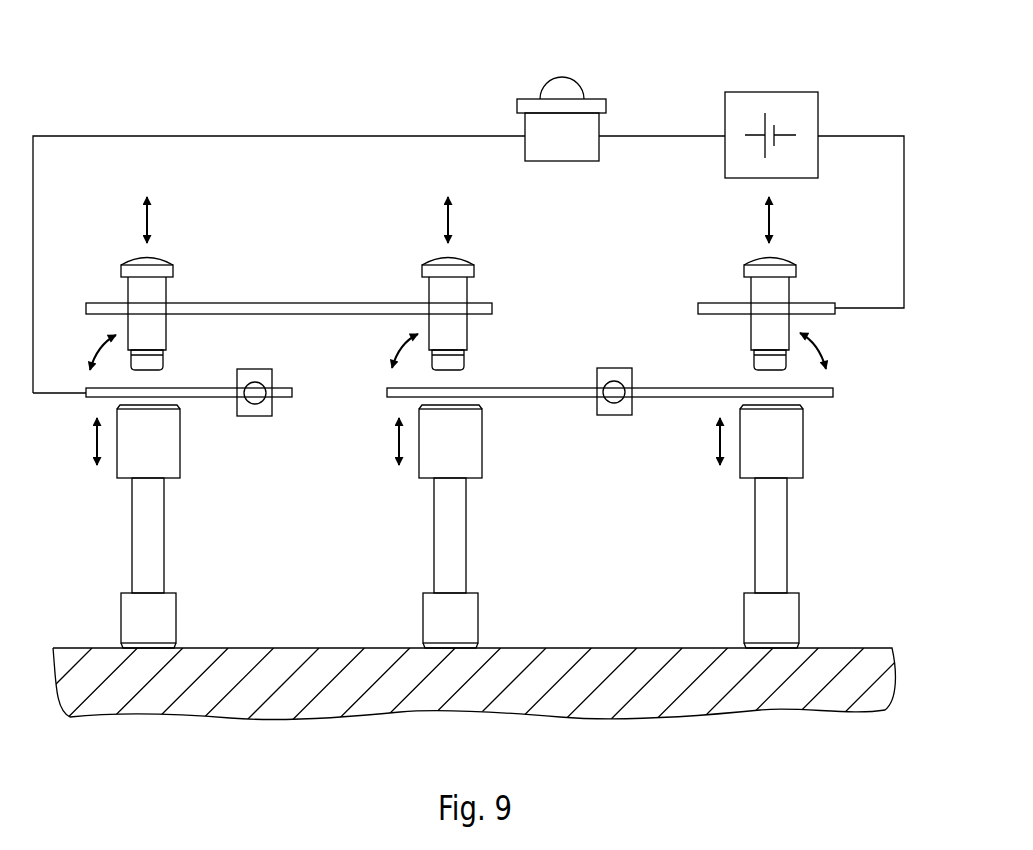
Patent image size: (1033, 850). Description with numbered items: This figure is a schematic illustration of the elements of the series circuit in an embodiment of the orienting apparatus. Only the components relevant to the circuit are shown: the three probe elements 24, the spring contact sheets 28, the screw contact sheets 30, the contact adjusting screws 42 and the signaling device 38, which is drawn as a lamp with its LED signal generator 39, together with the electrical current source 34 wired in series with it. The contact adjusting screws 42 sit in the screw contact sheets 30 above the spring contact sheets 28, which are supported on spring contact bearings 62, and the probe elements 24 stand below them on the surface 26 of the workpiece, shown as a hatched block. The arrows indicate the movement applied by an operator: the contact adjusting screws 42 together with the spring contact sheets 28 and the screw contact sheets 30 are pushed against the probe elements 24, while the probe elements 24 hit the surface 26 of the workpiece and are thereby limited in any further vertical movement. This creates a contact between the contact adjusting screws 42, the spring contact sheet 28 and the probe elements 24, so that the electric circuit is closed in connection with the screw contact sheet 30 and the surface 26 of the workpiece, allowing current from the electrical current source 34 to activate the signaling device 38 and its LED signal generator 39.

The probe elements 24 is at (155, 540).
The surface of the workpiece 26 is at (335, 645).
The spring contact sheet 28 is at (210, 397).
The screw contact sheet 30 is at (275, 303).
The electrical current source 34 is at (772, 92).
The signaling device 38 is at (563, 82).
The LED signal generator 39 is at (562, 78).
The contact adjusting screw 42 is at (159, 262).
The spring contact bearing 62 is at (255, 416).